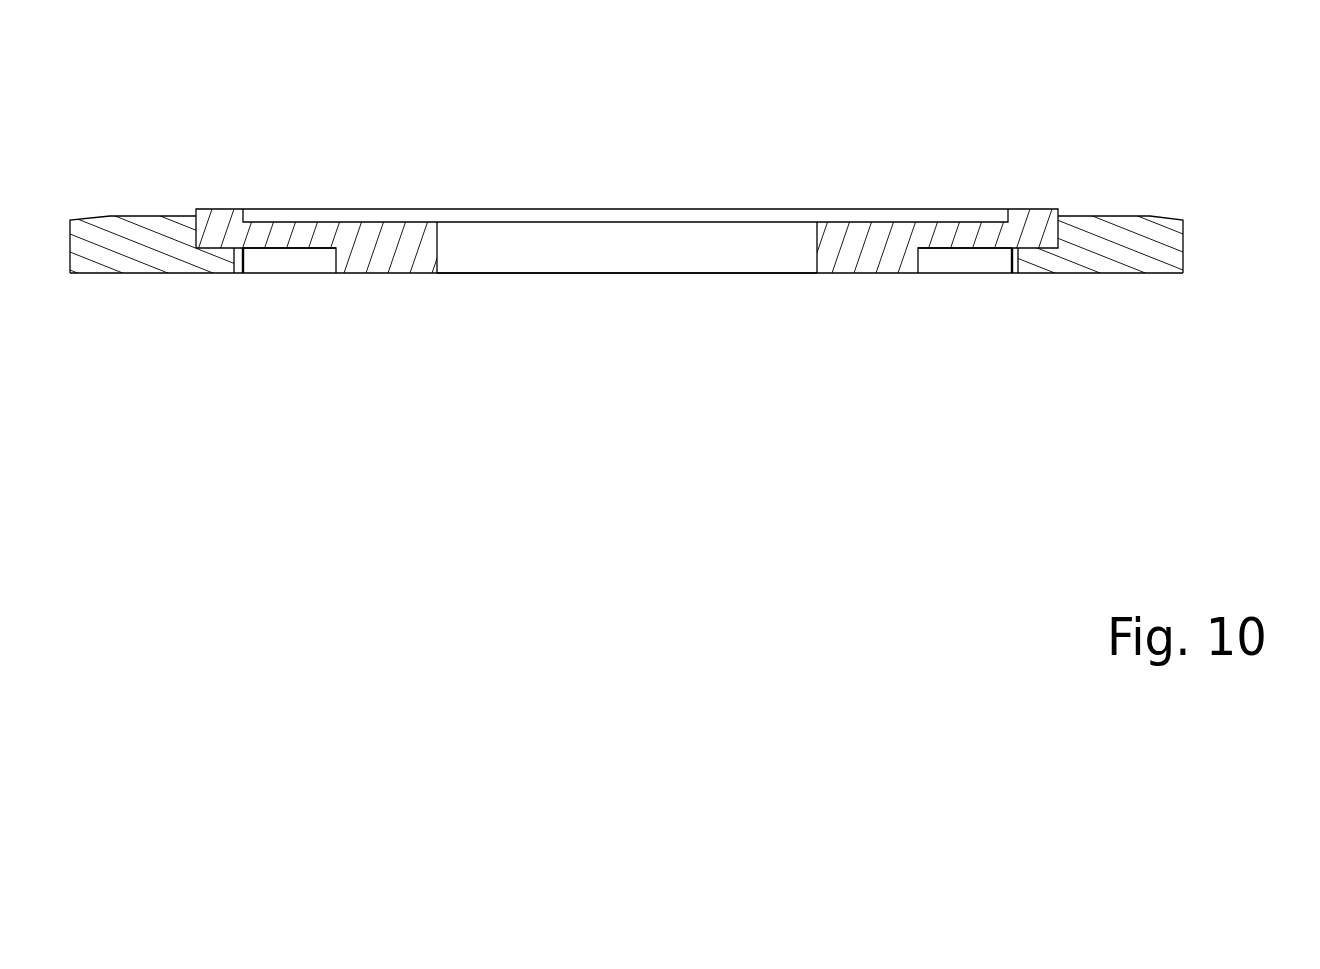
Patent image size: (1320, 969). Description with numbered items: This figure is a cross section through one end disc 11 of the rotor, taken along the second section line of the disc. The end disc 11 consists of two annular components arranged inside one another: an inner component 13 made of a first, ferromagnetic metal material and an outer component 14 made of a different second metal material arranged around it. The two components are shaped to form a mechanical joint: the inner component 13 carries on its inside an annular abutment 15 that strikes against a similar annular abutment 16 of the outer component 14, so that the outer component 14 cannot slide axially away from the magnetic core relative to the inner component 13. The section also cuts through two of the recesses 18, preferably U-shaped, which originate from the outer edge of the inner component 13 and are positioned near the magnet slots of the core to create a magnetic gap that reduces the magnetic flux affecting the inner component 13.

The end disc 11 is at (626, 309).
The inner component 13 is at (852, 340).
The outer component 14 is at (147, 156).
The annular abutment 15 is at (217, 225).
The annular abutment 16 is at (218, 255).
The recess 18 is at (292, 262).